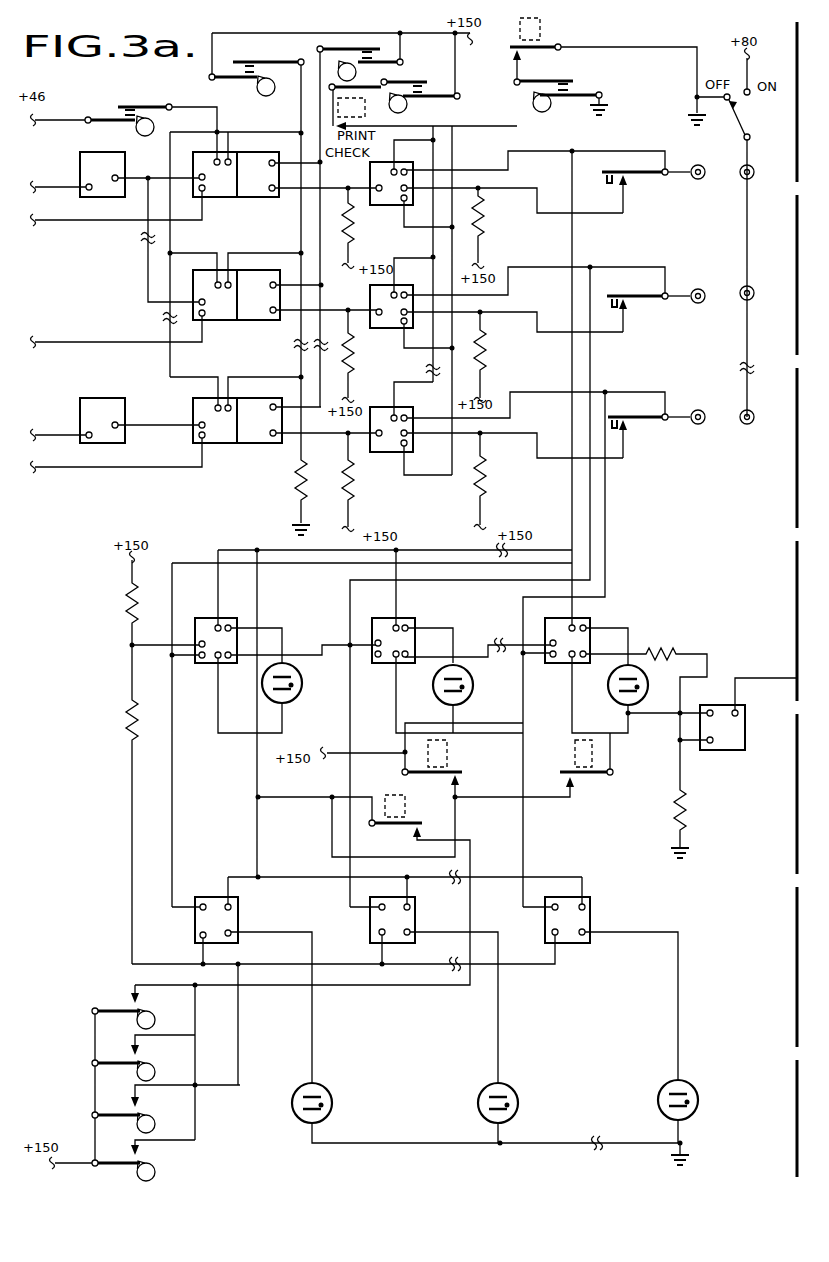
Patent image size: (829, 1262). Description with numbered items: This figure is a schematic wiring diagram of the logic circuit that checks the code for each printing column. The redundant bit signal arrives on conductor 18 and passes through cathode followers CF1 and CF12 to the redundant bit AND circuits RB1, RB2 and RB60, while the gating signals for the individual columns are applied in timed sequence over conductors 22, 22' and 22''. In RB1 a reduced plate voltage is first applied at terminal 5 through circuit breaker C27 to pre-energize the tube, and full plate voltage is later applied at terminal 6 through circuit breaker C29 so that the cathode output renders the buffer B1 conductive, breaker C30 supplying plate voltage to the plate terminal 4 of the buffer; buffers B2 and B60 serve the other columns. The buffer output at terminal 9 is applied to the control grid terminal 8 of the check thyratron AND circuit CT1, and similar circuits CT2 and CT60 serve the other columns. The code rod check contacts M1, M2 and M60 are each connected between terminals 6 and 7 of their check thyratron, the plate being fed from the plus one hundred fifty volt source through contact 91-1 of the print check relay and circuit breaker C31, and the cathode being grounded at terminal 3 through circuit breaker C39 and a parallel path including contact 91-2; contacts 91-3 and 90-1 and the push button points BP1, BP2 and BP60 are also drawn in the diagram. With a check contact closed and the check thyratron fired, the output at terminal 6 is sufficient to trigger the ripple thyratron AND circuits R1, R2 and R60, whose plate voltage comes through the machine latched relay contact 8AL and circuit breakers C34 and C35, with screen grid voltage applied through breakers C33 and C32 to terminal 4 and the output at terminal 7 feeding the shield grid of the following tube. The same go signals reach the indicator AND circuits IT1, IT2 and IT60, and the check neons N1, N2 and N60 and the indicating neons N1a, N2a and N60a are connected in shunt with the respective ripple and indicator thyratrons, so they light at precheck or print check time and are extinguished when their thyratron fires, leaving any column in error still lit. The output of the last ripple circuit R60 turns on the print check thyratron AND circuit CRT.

The circuit breaker C27 is at (116, 110).
The circuit breaker C29 is at (242, 65).
The circuit breaker C30 is at (378, 46).
The circuit breaker C31 is at (438, 77).
The circuit breaker C39 is at (572, 86).
The contact of print check relay 91-1 is at (355, 130).
The contact of print check relay 91-2 is at (535, 45).
The relay contact 91-3 is at (586, 767).
The relay contact 90-1 is at (432, 767).
The machine latched relay contact 8AL is at (395, 821).
The cathode follower CF1 is at (100, 155).
The cathode follower CF12 is at (102, 420).
The conductor 18 is at (55, 186).
The conductor 22 is at (53, 212).
The conductor 22' is at (57, 330).
The conductor 22'' is at (59, 458).
The redundant bit AND circuit RB1 is at (236, 174).
The buffer B1 is at (257, 176).
The redundant bit AND circuit RB2 is at (230, 322).
The buffer B2 is at (259, 297).
The redundant bit AND circuit RB60 is at (230, 447).
The buffer B60 is at (258, 420).
The terminal 3 is at (198, 189).
The terminal 4 is at (275, 161).
The terminal 5 is at (215, 160).
The terminal 6 is at (230, 160).
The terminal 7 is at (419, 190).
The terminal 8 is at (199, 175).
The terminal 9 is at (275, 190).
The check thyratron AND circuit CT1 is at (380, 207).
The check thyratron AND circuit CT2 is at (380, 332).
The check thyratron AND circuit CT60 is at (380, 455).
The code rod check contact M1 is at (628, 179).
The code rod check contact M2 is at (628, 302).
The code rod check contact M60 is at (628, 423).
The push button BP1 is at (706, 159).
The push button BP2 is at (705, 290).
The push button BP60 is at (708, 404).
The ripple thyratron AND circuit R1 is at (216, 640).
The ripple thyratron AND circuit R2 is at (393, 640).
The ripple thyratron AND circuit R60 is at (567, 640).
The check neon N1 is at (301, 675).
The check neon N2 is at (473, 673).
The check neon N60 is at (610, 694).
The print check thyratron AND circuit CRT is at (722, 727).
The indicator AND circuit IT1 is at (216, 920).
The indicator AND circuit IT2 is at (392, 920).
The indicator AND circuit IT60 is at (567, 920).
The indicating neon N1a is at (329, 1113).
The indicating neon N2a is at (516, 1113).
The indicating neon N60a is at (694, 1109).
The circuit breaker C32 is at (147, 1169).
The circuit breaker C33 is at (147, 1121).
The circuit breaker C34 is at (147, 1069).
The circuit breaker C35 is at (147, 1017).